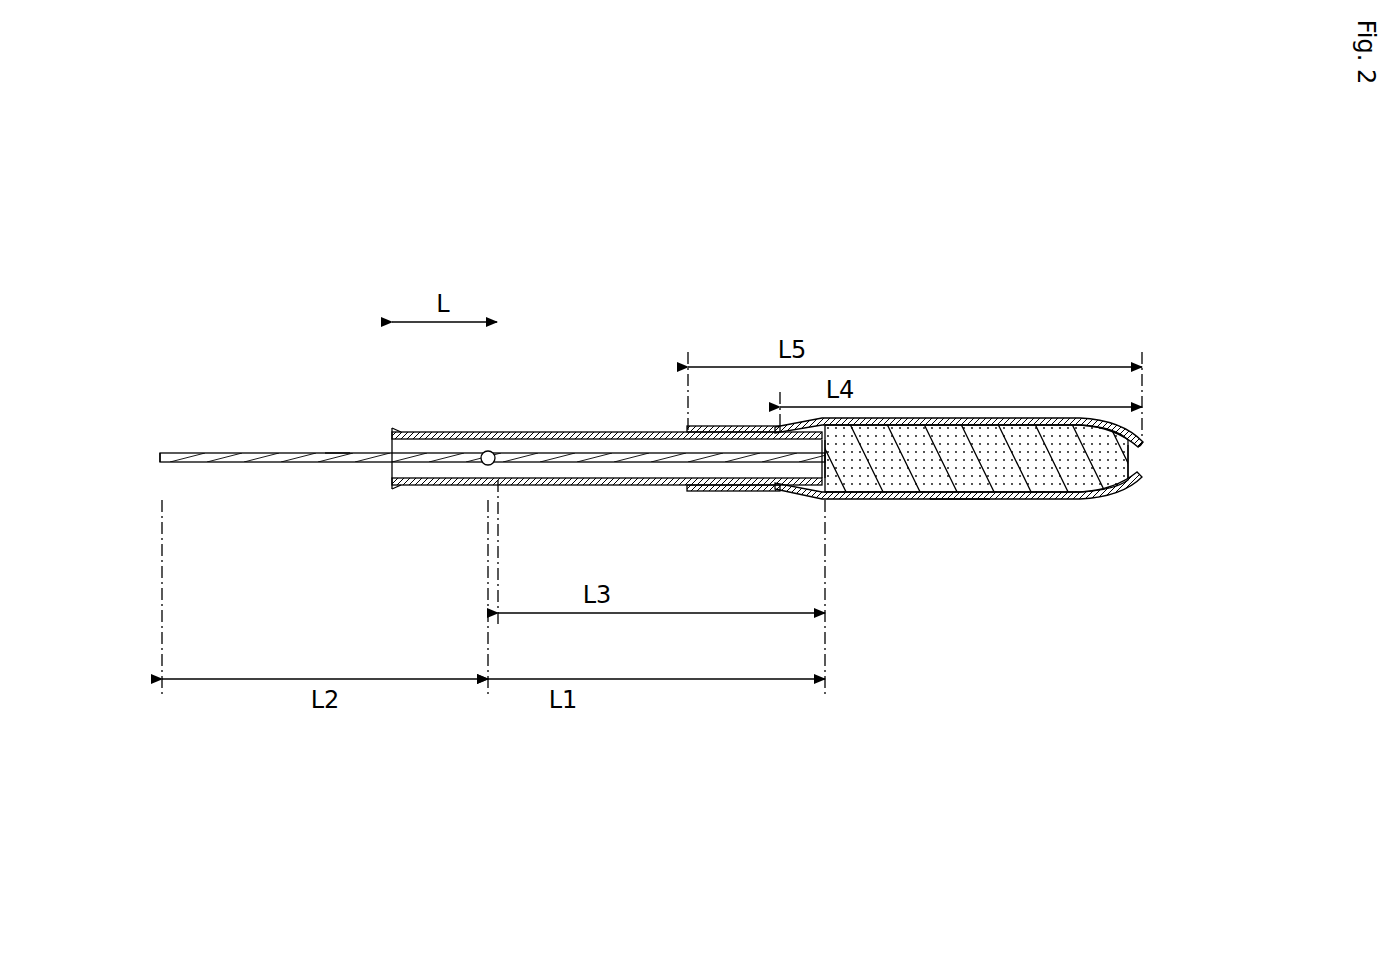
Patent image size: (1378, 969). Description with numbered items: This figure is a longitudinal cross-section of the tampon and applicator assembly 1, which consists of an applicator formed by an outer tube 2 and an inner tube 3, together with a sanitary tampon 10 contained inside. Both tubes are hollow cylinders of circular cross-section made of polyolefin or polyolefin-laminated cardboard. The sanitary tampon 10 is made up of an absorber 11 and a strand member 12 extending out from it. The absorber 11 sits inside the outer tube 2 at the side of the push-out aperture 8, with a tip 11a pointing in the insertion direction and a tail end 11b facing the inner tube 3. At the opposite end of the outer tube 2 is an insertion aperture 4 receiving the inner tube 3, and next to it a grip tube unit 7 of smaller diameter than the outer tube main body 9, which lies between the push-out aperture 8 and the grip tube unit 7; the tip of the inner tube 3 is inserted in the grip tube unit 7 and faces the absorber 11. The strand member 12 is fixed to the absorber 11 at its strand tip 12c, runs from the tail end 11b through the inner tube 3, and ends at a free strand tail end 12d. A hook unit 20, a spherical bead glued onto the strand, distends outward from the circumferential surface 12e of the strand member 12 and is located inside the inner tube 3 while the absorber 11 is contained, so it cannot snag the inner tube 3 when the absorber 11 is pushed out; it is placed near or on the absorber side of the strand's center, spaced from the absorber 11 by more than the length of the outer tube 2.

The tampon and applicator assembly 1 is at (993, 350).
The outer tube 2 is at (937, 494).
The inner tube 3 is at (455, 445).
The insertion aperture 4 is at (690, 491).
The grip tube unit 7 is at (742, 428).
The push-out aperture 8 is at (1135, 460).
The outer tube main body 9 is at (957, 498).
The sanitary tampon 10 is at (621, 491).
The absorber 11 is at (1032, 490).
The tip 11a is at (1140, 480).
The tail end 11b is at (822, 456).
The strand member 12 is at (307, 463).
The strand tip 12c is at (850, 497).
The strand tail end 12d is at (160, 458).
The circumferential surface 12e is at (336, 454).
The hook unit 20 is at (488, 451).